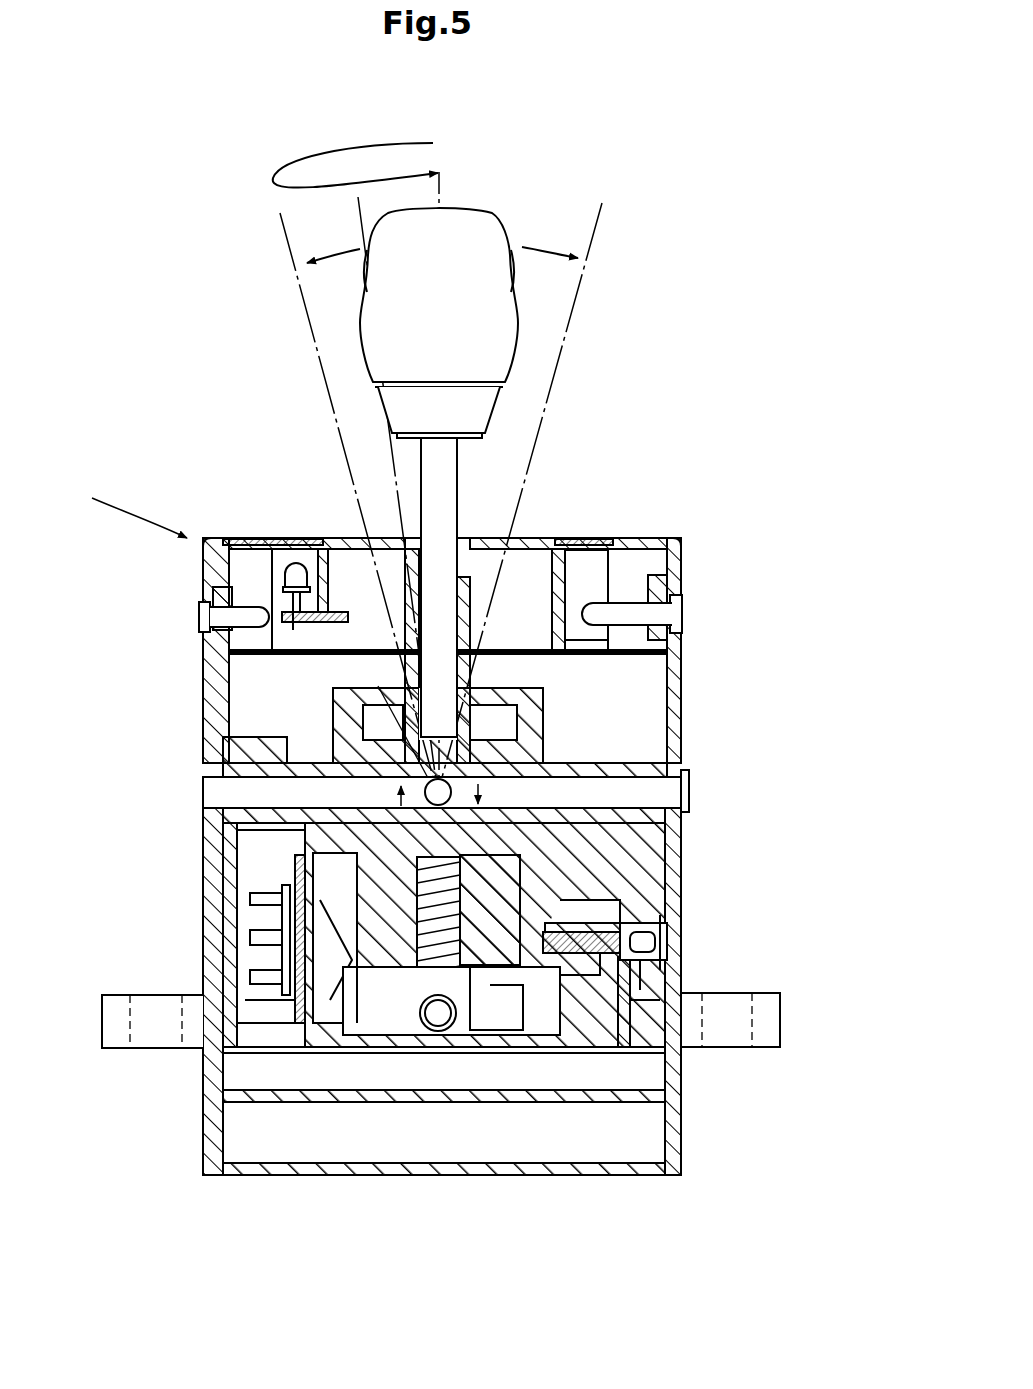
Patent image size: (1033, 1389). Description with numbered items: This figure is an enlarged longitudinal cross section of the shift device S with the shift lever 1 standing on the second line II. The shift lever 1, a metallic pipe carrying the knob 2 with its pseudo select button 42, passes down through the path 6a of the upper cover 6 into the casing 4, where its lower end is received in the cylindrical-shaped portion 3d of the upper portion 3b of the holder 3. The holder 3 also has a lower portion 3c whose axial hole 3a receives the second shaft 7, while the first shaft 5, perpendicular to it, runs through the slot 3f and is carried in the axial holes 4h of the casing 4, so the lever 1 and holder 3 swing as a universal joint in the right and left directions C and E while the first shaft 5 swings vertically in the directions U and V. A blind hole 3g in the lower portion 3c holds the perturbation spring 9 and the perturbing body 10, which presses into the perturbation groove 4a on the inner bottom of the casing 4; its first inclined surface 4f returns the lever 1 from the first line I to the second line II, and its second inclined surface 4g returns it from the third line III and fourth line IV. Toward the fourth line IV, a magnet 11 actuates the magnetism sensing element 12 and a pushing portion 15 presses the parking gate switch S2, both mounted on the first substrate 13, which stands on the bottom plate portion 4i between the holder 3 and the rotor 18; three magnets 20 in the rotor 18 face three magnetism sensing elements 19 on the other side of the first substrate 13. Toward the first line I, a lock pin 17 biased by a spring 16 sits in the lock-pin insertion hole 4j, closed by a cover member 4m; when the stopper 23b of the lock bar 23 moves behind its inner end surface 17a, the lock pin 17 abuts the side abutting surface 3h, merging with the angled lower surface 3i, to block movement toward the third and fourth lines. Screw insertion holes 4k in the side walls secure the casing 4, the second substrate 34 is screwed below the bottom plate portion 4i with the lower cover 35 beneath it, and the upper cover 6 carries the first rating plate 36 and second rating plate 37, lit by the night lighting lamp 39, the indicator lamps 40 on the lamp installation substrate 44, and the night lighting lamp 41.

The shift lever 1 is at (450, 477).
The knob 2 is at (470, 228).
The holder 3 is at (690, 827).
The axial hole 3a is at (688, 795).
The upper portion 3b is at (505, 698).
The lower portion 3c is at (540, 875).
The cylindrical-shaped portion 3d is at (470, 680).
The slot 3f is at (525, 726).
The blind hole 3g is at (462, 1050).
The side abutting surface 3h is at (600, 893).
The angled lower surface 3i is at (653, 1085).
The casing 4 is at (688, 1131).
The perturbation groove 4a is at (500, 1047).
The first inclined surface 4f is at (420, 1047).
The second inclined surface 4g is at (570, 1047).
The axial holes 4h is at (684, 787).
The bottom plate portion 4i is at (340, 1047).
The lock-pin insertion hole 4j is at (665, 960).
The screw insertion holes 4k is at (128, 1005).
The cover member 4m is at (690, 1027).
The first shaft 5 is at (612, 787).
The upper cover 6 is at (645, 537).
The path 6a is at (455, 546).
The second shaft 7 is at (394, 716).
The perturbation spring 9 is at (438, 1050).
The perturbing body 10 is at (420, 1040).
The magnet 11 is at (380, 1047).
The magnetism sensing element 12 is at (300, 1047).
The first substrate 13 is at (298, 1025).
The pushing portion 15 is at (333, 855).
The spring 16 is at (600, 930).
The lock pin 17 is at (640, 1003).
The inner end surface 17a is at (600, 920).
The rotor 18 is at (245, 1018).
The magnetism sensing elements 19 is at (262, 978).
The magnets 20 is at (270, 975).
The lock bar 23 is at (610, 980).
The stopper 23b is at (625, 992).
The second substrate 34 is at (620, 1102).
The lower cover 35 is at (650, 1163).
The first rating plate 36 is at (248, 540).
The second rating plate 37 is at (585, 540).
The night lighting lamp 39 is at (218, 602).
The indicator lamps 40 is at (293, 564).
The night lighting lamp 41 is at (598, 606).
The pseudo select button 42 is at (513, 278).
The lamp installation substrate 44 is at (348, 565).
The shift device S is at (80, 511).
The parking gate switch S2 is at (298, 855).
The vertical swing direction U is at (386, 801).
The vertical swing direction V is at (493, 801).
The right-left swing direction C is at (550, 235).
The right-left swing direction E is at (333, 238).
The first line I is at (531, 447).
The second line II is at (440, 442).
The third line III is at (385, 444).
The fourth line IV is at (337, 450).